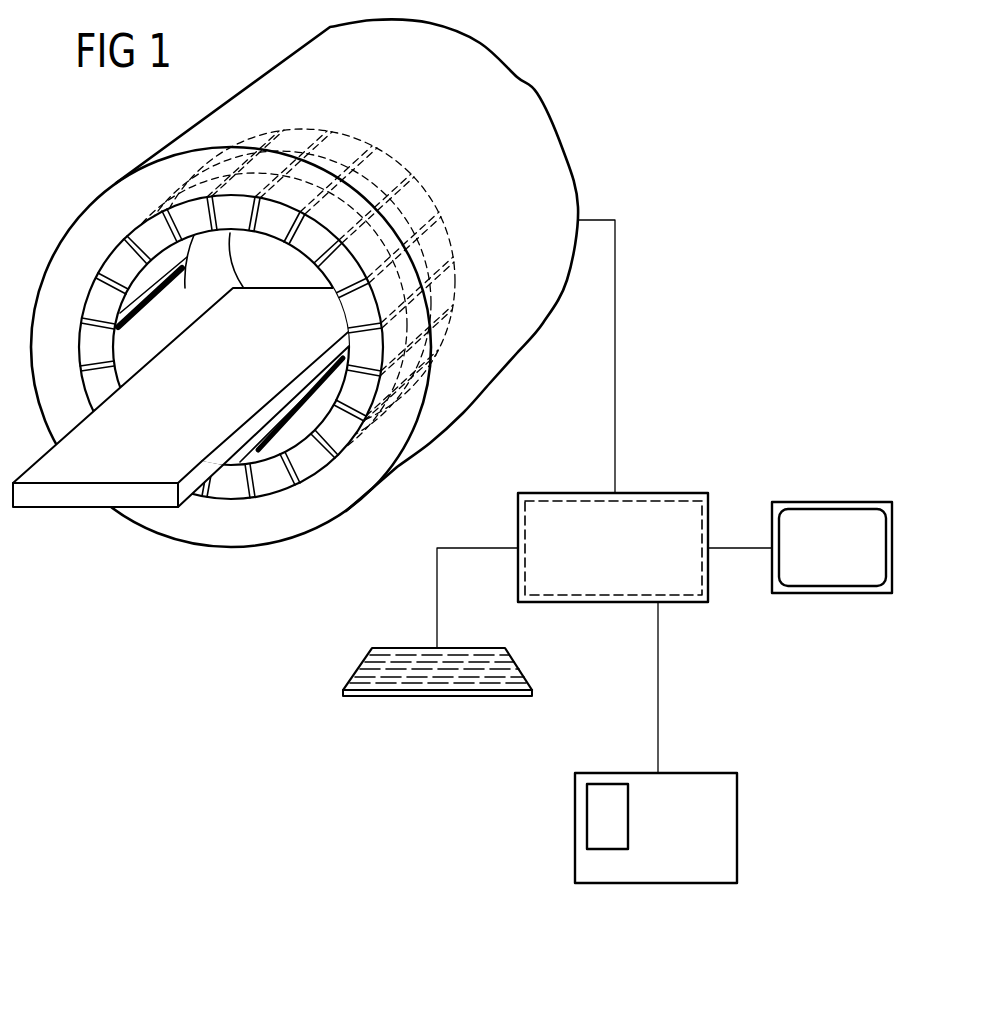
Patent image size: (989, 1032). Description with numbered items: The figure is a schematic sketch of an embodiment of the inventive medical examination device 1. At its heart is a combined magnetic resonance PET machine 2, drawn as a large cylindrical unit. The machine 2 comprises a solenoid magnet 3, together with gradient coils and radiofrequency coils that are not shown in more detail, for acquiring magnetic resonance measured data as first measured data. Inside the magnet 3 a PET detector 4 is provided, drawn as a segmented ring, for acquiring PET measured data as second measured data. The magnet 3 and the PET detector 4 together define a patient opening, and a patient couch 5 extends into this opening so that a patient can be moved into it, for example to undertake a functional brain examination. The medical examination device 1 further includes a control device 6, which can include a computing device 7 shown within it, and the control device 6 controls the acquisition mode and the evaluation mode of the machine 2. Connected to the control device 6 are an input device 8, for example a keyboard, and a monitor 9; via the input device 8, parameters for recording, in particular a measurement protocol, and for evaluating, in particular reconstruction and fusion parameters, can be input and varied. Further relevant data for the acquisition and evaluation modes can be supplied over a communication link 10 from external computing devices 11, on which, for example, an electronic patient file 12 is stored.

The medical examination device 1 is at (728, 171).
The combined magnetic resonance PET machine 2 is at (545, 91).
The solenoid magnet 3 is at (97, 237).
The PET detector 4 is at (103, 300).
The patient couch 5 is at (100, 497).
The control device 6 is at (583, 602).
The computing device 7 is at (683, 500).
The input device 8 is at (390, 645).
The monitor 9 is at (823, 500).
The communication link 10 is at (658, 723).
The external computing devices 11 is at (737, 808).
The electronic patient file 12 is at (587, 822).